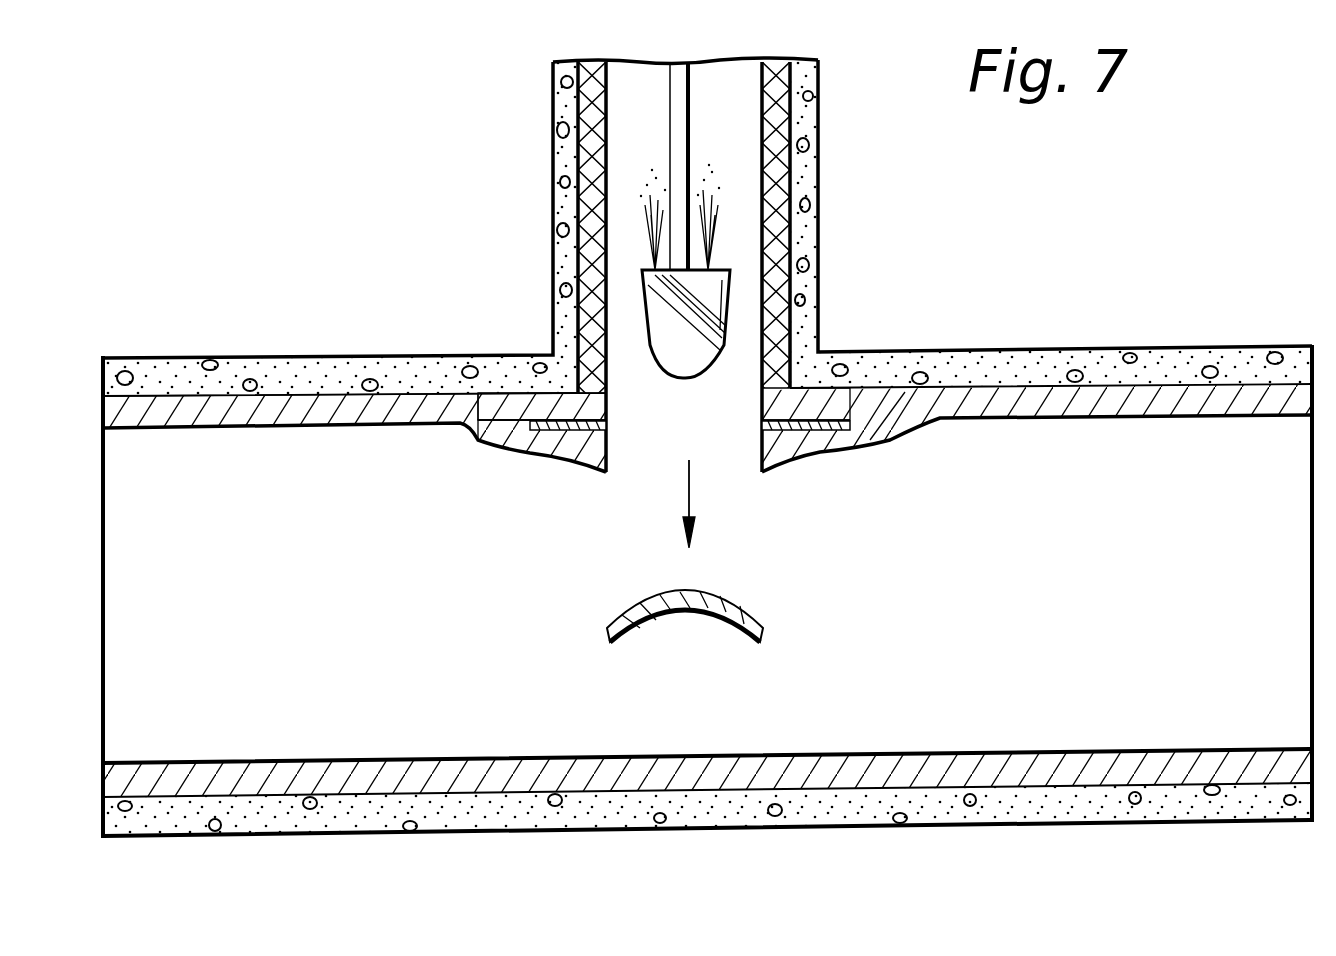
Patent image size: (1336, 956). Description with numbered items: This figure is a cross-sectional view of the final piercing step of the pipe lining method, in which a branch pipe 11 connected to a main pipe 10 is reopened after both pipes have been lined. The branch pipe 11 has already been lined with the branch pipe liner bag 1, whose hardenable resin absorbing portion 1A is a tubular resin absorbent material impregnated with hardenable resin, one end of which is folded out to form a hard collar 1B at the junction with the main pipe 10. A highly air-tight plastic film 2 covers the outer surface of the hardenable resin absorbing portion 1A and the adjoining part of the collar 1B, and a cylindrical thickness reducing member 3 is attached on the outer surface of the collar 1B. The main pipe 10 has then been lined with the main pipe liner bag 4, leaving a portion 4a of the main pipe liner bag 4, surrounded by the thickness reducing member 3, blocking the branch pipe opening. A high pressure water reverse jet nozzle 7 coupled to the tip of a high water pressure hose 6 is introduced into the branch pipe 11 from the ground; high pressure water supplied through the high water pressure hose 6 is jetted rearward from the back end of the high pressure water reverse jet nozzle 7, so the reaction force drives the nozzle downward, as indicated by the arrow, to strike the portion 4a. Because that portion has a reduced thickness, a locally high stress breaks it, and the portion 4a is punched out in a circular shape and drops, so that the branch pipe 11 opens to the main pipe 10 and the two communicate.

The branch pipe liner bag 1 is at (606, 150).
The hardenable resin absorbing portion 1A is at (596, 318).
The collar 1B is at (880, 412).
The plastic film 2 is at (762, 258).
The thickness reducing member 3 is at (598, 442).
The main pipe liner bag 4 is at (1068, 405).
The portion of the main pipe liner bag blocking the branch pipe opening 4a is at (718, 612).
The high water pressure hose 6 is at (688, 146).
The high pressure water reverse jet nozzle 7 is at (700, 378).
The main pipe 10 is at (897, 820).
The branch pipe 11 is at (818, 225).